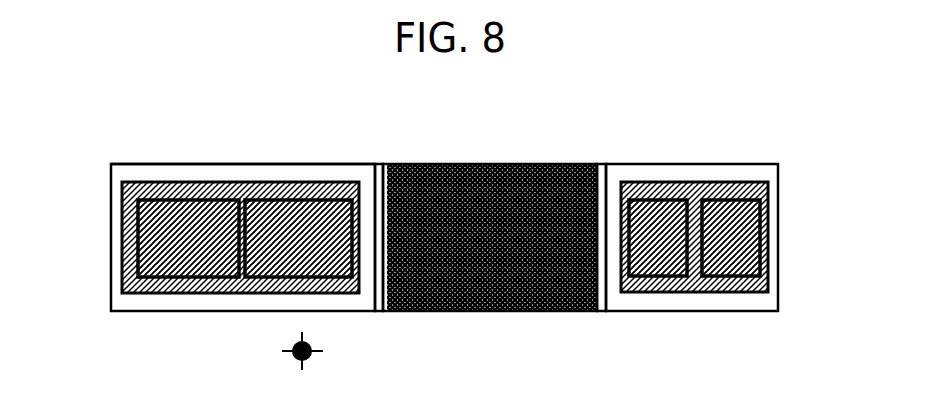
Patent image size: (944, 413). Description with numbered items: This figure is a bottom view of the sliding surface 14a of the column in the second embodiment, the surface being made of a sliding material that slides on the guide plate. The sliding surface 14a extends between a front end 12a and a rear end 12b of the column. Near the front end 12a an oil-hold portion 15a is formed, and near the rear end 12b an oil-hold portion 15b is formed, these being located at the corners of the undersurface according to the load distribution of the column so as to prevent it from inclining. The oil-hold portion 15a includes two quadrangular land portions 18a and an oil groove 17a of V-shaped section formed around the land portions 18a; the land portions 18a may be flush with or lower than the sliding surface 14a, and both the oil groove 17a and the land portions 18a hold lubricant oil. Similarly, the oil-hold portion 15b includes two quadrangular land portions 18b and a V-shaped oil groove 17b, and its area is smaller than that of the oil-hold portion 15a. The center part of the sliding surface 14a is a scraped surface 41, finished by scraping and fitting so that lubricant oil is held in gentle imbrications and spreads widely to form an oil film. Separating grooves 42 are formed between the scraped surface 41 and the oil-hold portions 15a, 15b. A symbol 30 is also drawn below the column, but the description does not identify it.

The front end 12a is at (110, 287).
The rear end 12b is at (778, 300).
The sliding surface 14a is at (137, 165).
The oil-hold portion 15a is at (250, 303).
The oil-hold portion 15b is at (730, 302).
The oil groove 17a is at (243, 200).
The oil groove 17b is at (650, 293).
The land portion 18a is at (193, 218).
The land portion 18b is at (656, 217).
The light source / observation point 30 is at (310, 358).
The scraped surface 41 is at (488, 310).
The separating groove 42 is at (381, 302).